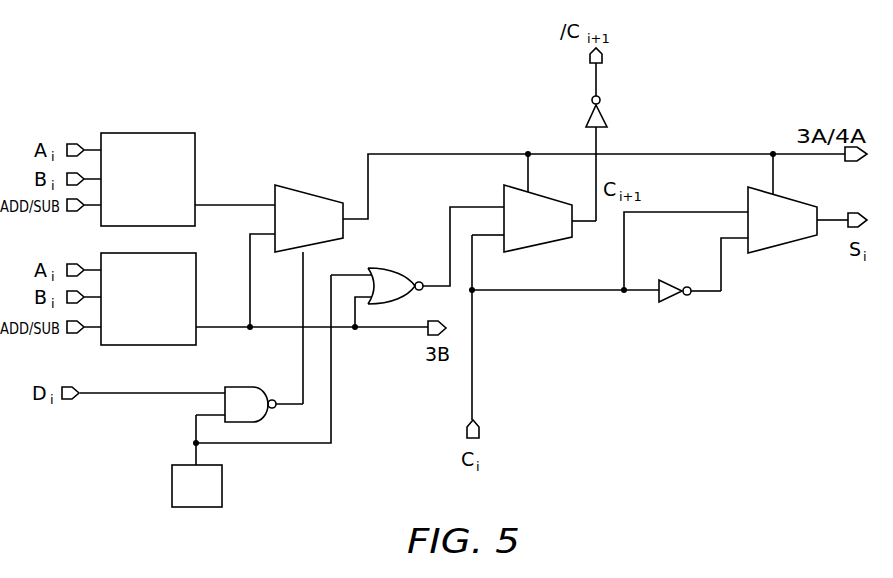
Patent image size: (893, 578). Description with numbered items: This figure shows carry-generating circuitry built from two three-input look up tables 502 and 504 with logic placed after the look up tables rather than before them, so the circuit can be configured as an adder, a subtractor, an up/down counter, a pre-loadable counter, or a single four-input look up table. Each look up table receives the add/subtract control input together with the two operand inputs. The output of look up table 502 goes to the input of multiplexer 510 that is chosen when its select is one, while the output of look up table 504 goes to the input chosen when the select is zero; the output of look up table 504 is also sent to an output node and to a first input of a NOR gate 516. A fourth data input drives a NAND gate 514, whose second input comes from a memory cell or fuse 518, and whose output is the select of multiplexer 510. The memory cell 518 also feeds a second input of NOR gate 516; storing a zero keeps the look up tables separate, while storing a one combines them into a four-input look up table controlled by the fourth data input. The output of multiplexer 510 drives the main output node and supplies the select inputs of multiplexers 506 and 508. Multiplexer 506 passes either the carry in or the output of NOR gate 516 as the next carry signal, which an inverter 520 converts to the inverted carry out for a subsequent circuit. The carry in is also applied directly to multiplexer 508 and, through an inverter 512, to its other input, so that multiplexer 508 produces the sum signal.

The look up table 502 is at (162, 133).
The look up table 504 is at (190, 253).
The multiplexer 506 is at (525, 250).
The multiplexer 508 is at (772, 250).
The multiplexer 510 is at (292, 185).
The inverter 512 is at (667, 302).
The NAND gate 514 is at (237, 387).
The NOR gate 516 is at (383, 267).
The memory cell 518 is at (222, 483).
The inverter 520 is at (604, 116).